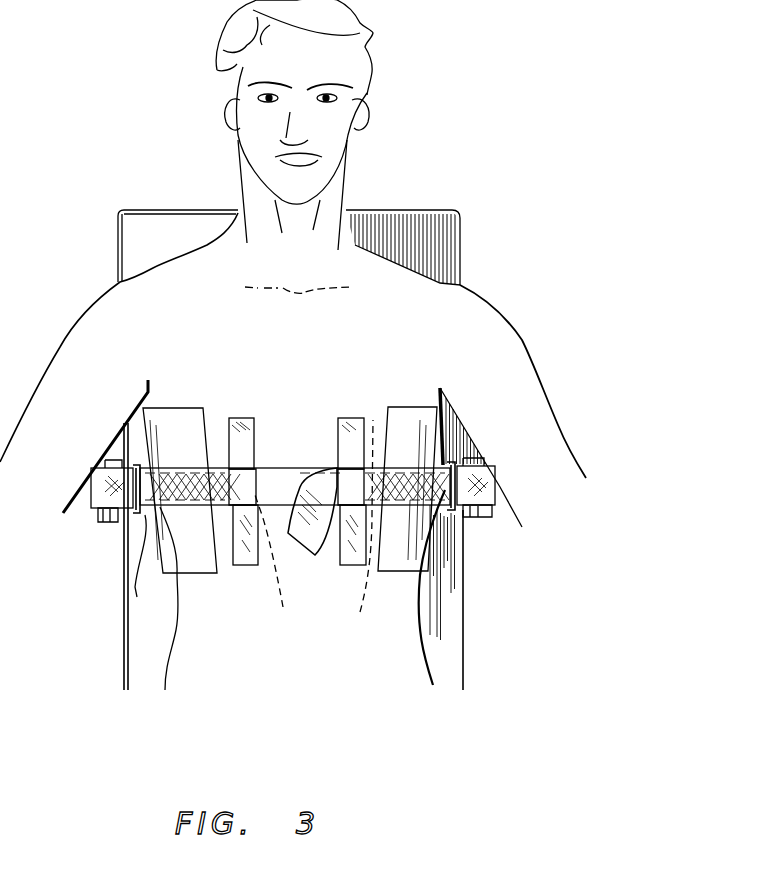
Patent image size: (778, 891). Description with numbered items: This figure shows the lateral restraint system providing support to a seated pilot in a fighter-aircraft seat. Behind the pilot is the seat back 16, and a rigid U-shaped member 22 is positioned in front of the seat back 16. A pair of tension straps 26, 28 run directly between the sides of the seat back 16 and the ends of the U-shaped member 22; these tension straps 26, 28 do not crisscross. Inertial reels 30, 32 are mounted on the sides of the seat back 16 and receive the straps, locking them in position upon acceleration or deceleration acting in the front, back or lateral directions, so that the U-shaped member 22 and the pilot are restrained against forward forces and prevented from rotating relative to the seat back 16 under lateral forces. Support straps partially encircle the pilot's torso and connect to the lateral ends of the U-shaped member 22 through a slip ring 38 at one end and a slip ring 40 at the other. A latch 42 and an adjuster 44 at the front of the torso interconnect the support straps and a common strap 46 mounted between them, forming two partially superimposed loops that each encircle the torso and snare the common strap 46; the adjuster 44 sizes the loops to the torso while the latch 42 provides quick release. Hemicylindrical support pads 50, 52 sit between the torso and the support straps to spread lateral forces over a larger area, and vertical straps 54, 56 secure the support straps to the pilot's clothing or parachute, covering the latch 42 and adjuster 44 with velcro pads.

The seat back 16 is at (450, 205).
The U-shaped member 22 is at (442, 449).
The tension strap 26 is at (212, 422).
The tension strap 28 is at (118, 455).
The inertial reel 30 is at (117, 518).
The inertial reel 32 is at (497, 513).
The slip ring 38 is at (143, 562).
The slip ring 40 is at (463, 525).
The latch 42 is at (277, 566).
The adjuster 44 is at (365, 530).
The common strap 46 is at (290, 462).
The hemicylindrical support pad 50 is at (177, 410).
The hemicylindrical support pad 52 is at (405, 412).
The vertical strap 54 is at (260, 566).
The vertical strap 56 is at (350, 565).